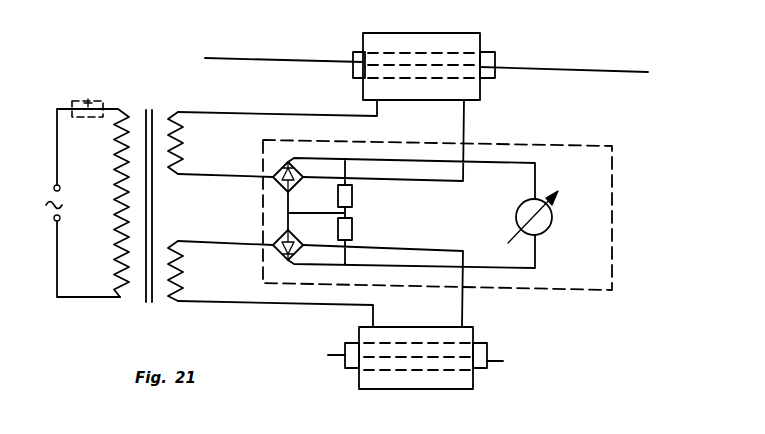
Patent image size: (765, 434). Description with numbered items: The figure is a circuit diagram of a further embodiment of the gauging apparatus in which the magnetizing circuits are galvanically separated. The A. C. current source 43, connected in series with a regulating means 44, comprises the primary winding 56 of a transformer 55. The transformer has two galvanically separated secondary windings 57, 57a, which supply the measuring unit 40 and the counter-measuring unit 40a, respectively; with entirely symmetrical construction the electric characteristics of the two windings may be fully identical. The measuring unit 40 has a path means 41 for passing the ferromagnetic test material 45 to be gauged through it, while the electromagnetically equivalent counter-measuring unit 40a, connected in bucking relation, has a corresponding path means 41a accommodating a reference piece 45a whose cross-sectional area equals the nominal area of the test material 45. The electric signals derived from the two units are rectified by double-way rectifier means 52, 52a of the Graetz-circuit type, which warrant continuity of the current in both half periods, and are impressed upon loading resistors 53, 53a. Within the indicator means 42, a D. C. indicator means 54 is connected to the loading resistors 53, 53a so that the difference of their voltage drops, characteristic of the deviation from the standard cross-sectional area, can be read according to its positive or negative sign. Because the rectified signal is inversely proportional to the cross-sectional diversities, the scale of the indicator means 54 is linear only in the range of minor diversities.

The measuring unit 40 is at (418, 44).
The counter-measuring unit 40a is at (470, 384).
The path means 41 is at (352, 58).
The path means of counter-measuring unit 41a is at (343, 347).
The indicator means 42 is at (612, 199).
The A. C. current source 43 is at (63, 208).
The regulating means 44 is at (88, 99).
The test material 45 is at (509, 67).
The reference piece 45a is at (458, 361).
The rectifier means 52 is at (292, 189).
The rectifier means 52a is at (289, 236).
The loading resistor 53 is at (352, 198).
The loading resistor 53a is at (352, 231).
The D. C. indicator means 54 is at (552, 219).
The transformer 55 is at (149, 108).
The primary winding 56 is at (111, 249).
The secondary winding 57 is at (184, 149).
The secondary winding 57a is at (184, 277).